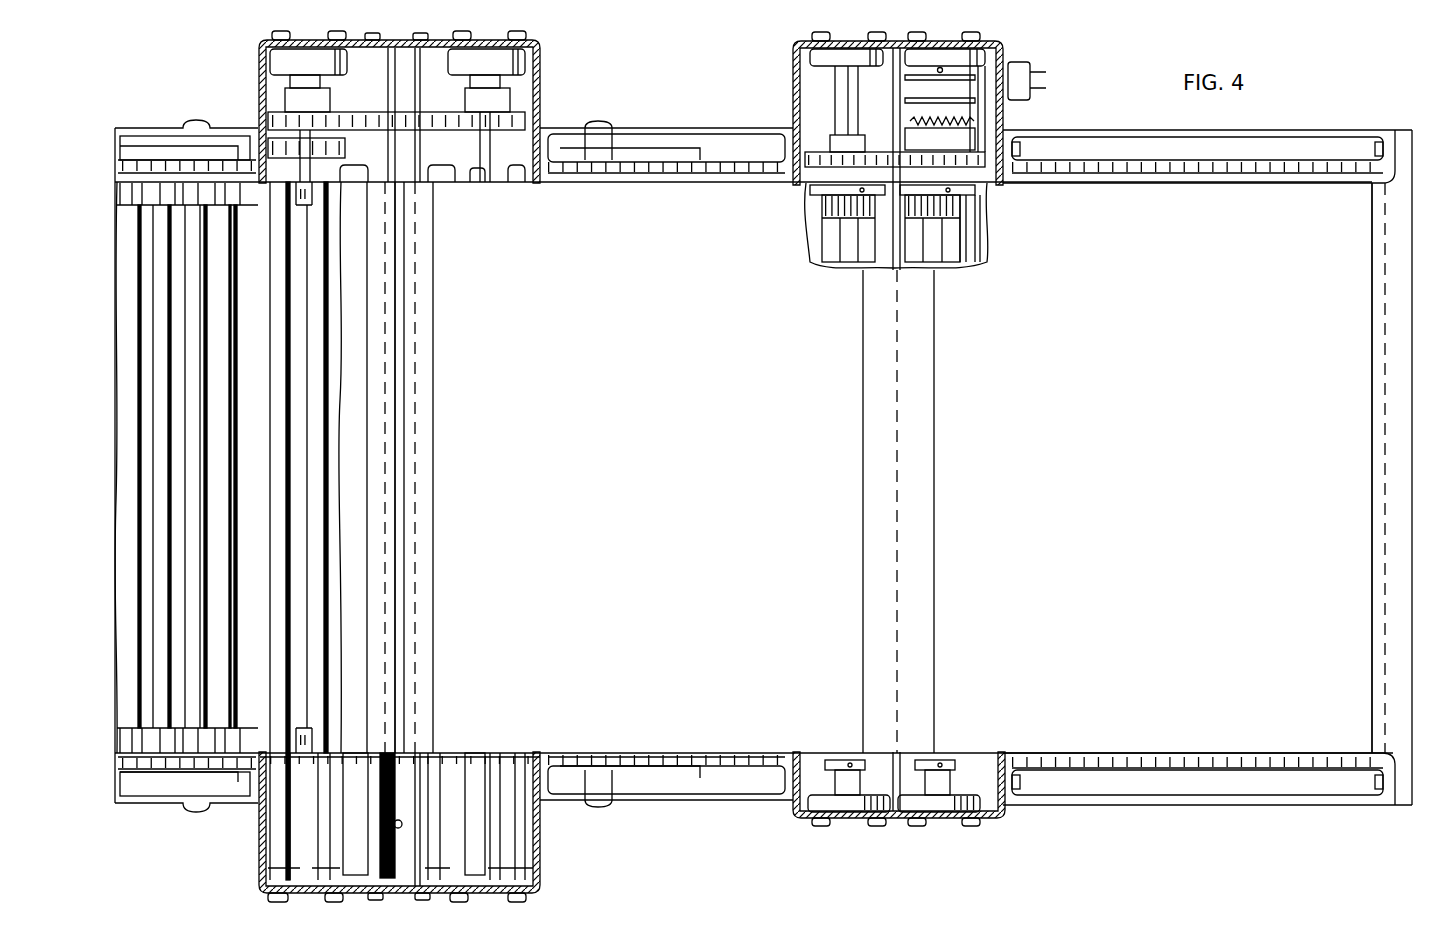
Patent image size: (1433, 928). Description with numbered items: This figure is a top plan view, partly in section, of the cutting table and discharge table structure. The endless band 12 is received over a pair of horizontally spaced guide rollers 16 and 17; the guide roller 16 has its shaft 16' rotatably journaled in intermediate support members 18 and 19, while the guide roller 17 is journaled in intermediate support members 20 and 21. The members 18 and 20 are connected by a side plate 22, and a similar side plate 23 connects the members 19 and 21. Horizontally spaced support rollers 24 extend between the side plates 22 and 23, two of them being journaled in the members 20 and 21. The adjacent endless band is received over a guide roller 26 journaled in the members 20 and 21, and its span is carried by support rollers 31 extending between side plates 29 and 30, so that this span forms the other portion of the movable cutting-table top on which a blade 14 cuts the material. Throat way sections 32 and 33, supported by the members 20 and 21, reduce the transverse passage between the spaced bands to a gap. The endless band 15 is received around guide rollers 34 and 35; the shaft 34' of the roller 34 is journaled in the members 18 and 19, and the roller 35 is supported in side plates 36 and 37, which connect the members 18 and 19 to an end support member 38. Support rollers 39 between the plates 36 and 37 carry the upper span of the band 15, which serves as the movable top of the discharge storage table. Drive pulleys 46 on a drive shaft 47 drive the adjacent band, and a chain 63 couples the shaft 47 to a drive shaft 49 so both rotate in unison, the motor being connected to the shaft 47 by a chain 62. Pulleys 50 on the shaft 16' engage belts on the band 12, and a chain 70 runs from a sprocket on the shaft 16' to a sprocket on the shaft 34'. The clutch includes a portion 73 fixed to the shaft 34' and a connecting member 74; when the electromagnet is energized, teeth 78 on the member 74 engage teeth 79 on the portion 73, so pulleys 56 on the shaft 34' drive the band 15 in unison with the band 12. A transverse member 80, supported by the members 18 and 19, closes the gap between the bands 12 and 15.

The endless band 12 is at (655, 533).
The blade 14 is at (397, 550).
The endless band 15 is at (1135, 533).
The guide roller 16 is at (882, 240).
The shaft 16' is at (803, 109).
The guide roller 17 is at (462, 748).
The intermediate support member 18 is at (790, 76).
The intermediate support member 19 is at (796, 812).
The intermediate support member 20 is at (543, 92).
The intermediate support member 21 is at (545, 831).
The side plate 22 is at (680, 136).
The side plate 23 is at (713, 770).
The support rollers 24 is at (487, 767).
The guide roller 26 is at (375, 768).
The side plate 29 is at (146, 142).
The side plate 30 is at (158, 777).
The support rollers 31 is at (185, 238).
The throat way section 32 is at (390, 336).
The throat way section 33 is at (425, 402).
The guide roller 34 is at (1010, 247).
The shaft 34' is at (992, 220).
The guide roller 35 is at (1340, 180).
The side plate 36 is at (1140, 160).
The side plate 37 is at (1298, 770).
The end support member 38 is at (1405, 806).
The support rollers 39 is at (1245, 757).
The drive pulleys 46 is at (300, 207).
The drive shaft 47 is at (332, 172).
The drive shaft 49 is at (512, 165).
The pulleys 50 is at (828, 212).
The pulleys 56 is at (990, 225).
The chain 62 is at (268, 150).
The chain 63 is at (352, 120).
The chain 70 is at (812, 178).
The portion 73 is at (978, 72).
The connecting member 74 is at (978, 130).
The teeth 78 is at (978, 118).
The teeth 79 is at (900, 128).
The transverse member 80 is at (920, 545).